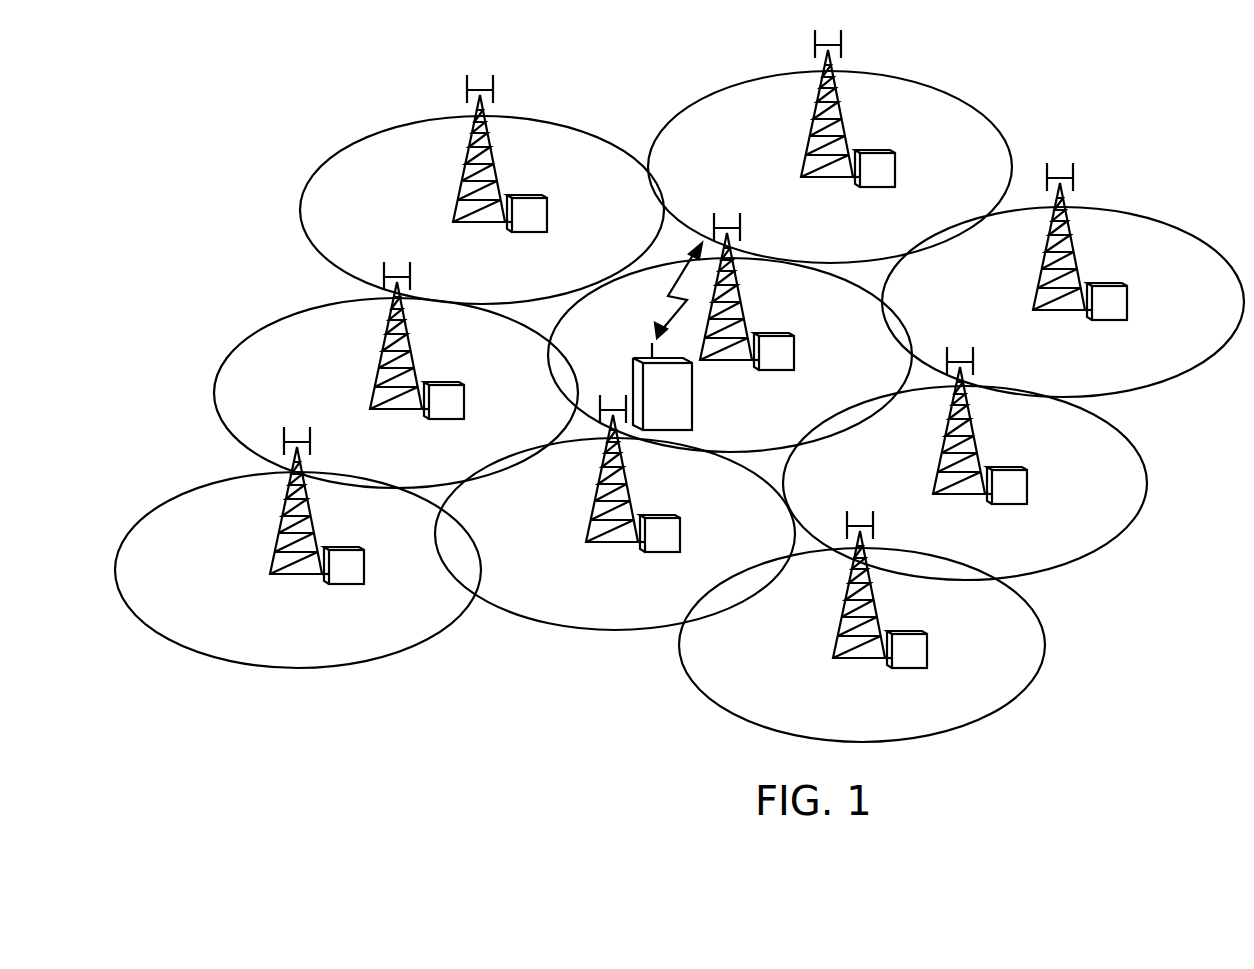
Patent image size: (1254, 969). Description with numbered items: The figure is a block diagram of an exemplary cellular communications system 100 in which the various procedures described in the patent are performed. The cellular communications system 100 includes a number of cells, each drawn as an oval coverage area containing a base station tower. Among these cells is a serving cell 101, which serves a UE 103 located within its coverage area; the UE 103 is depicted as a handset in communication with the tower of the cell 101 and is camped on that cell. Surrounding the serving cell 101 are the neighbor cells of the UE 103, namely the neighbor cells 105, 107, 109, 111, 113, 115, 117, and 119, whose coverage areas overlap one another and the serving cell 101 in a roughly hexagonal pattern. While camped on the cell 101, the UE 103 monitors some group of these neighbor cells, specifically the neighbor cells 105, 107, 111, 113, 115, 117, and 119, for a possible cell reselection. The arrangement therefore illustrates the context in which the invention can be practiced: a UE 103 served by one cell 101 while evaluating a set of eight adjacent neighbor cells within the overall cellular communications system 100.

The cellular communications system 100 is at (288, 90).
The cell 101 is at (804, 312).
The UE 103 is at (692, 412).
The neighbor cell 105 is at (746, 148).
The neighbor cell 107 is at (1001, 282).
The neighbor cell 109 is at (885, 465).
The neighbor cell 111 is at (718, 497).
The neighbor cell 113 is at (497, 358).
The neighbor cell 115 is at (589, 177).
The neighbor cell 117 is at (238, 545).
The neighbor cell 119 is at (802, 629).